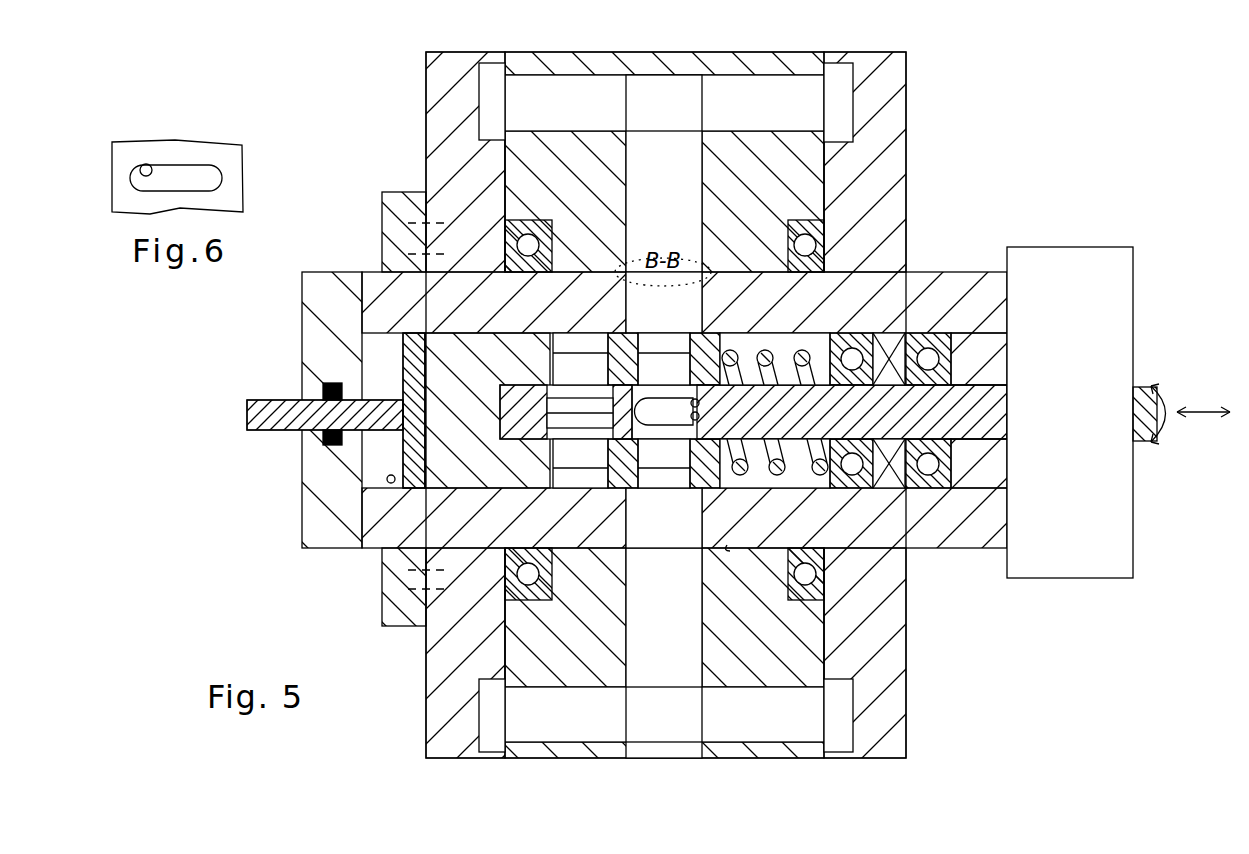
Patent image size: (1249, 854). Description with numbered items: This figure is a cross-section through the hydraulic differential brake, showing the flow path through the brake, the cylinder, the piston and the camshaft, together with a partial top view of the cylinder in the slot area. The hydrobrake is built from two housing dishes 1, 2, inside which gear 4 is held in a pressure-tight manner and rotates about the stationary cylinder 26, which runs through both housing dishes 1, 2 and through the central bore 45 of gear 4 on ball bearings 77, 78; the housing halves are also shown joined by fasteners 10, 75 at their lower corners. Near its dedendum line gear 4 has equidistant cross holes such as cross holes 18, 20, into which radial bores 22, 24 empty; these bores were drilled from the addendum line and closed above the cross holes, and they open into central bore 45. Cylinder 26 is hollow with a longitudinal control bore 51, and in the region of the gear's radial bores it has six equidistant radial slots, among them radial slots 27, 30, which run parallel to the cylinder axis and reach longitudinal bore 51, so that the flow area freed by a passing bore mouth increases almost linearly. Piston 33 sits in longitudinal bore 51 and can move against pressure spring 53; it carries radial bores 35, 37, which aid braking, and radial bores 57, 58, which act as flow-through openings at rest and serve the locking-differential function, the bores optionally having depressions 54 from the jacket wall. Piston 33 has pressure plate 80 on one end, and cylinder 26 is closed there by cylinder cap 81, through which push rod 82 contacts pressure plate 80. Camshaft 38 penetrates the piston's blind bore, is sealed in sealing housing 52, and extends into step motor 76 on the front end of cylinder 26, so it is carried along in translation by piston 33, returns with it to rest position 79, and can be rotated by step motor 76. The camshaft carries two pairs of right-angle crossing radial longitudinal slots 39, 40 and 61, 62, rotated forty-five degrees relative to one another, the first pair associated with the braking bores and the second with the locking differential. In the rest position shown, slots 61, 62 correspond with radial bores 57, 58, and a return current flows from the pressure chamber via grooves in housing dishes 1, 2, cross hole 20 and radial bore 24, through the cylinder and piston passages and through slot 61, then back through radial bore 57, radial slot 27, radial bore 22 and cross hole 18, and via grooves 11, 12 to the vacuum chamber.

In FIG. 5, the housing dish 1 is at (888, 106).
In FIG. 5, the housing dish 2 is at (432, 93).
In FIG. 5, the gear 4 is at (739, 184).
In FIG. 5, the bolt 10 is at (836, 743).
In FIG. 5, the groove 11 is at (845, 78).
In FIG. 5, the groove 12 is at (494, 77).
In FIG. 5, the cross hole 18 is at (753, 98).
In FIG. 5, the cross hole 20 is at (732, 724).
In FIG. 5, the radial bore 22 is at (650, 175).
In FIG. 5, the radial bore 24 is at (647, 610).
In FIG. 5, the cylinder 26 is at (955, 548).
In FIG. 6, the cylinder 26 is at (236, 170).
In FIG. 5, the radial slot 27 is at (647, 320).
In FIG. 6, the radial slot 27 is at (146, 170).
In FIG. 5, the radial slot 30 is at (652, 530).
In FIG. 5, the piston 33 is at (460, 346).
In FIG. 5, the radial bore 35 is at (565, 381).
In FIG. 5, the radial bore 37 is at (565, 466).
In FIG. 5, the camshaft 38 is at (1155, 409).
In FIG. 5, the radial longitudinal slot 39 is at (557, 405).
In FIG. 5, the radial longitudinal slot 40 is at (600, 422).
In FIG. 5, the central bore 45 is at (728, 546).
In FIG. 5, the longitudinal control bore 51 is at (391, 484).
In FIG. 5, the sealing housing 52 is at (920, 340).
In FIG. 5, the pressure spring 53 is at (730, 359).
In FIG. 5, the depression 54 is at (560, 339).
In FIG. 5, the radial bore 57 is at (648, 381).
In FIG. 5, the radial bore 58 is at (648, 466).
In FIG. 5, the radial longitudinal slot 61 is at (700, 403).
In FIG. 5, the radial longitudinal slot 62 is at (712, 422).
In FIG. 5, the bolt 75 is at (497, 745).
In FIG. 5, the step motor 76 is at (1077, 265).
In FIG. 5, the ball bearing 77 is at (530, 226).
In FIG. 5, the ball bearing 78 is at (795, 232).
In FIG. 5, the rest position 79 is at (402, 331).
In FIG. 5, the pressure plate 80 is at (412, 364).
In FIG. 5, the cylinder cap 81 is at (342, 540).
In FIG. 5, the push rod 82 is at (285, 430).